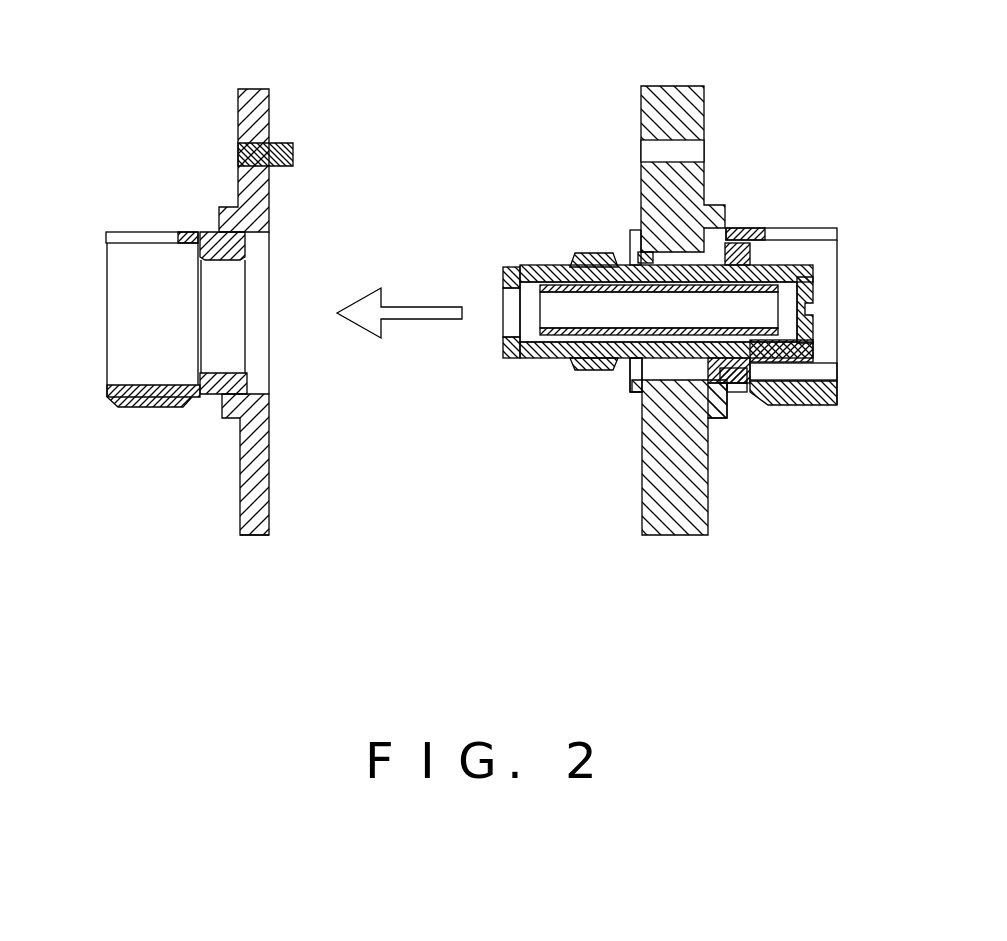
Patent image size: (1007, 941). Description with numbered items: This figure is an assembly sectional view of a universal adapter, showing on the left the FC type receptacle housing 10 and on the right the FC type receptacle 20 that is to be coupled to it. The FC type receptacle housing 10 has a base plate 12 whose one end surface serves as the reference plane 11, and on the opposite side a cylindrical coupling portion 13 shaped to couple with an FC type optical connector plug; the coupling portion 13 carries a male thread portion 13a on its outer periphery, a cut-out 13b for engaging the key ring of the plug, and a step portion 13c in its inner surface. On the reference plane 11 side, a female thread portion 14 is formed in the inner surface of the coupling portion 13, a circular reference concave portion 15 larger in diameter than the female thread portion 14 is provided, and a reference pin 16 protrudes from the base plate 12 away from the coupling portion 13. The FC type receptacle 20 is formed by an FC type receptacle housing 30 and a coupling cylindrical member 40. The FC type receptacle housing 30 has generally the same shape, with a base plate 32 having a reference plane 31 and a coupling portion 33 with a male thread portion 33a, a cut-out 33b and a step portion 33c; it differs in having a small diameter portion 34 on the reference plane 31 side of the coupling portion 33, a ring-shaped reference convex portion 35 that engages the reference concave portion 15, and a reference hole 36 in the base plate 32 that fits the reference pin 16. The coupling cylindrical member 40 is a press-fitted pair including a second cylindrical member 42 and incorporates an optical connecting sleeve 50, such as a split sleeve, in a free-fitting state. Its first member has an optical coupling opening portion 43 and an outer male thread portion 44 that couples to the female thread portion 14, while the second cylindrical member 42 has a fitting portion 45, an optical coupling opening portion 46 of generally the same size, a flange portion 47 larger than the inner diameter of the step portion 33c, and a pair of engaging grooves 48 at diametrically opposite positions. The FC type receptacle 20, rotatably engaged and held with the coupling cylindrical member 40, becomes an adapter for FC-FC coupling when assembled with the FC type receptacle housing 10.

The FC type receptacle housing 10 is at (170, 150).
The reference plane 11 is at (271, 493).
The base plate 12 is at (247, 538).
The coupling portion 13 is at (129, 330).
The male thread portion 13a is at (160, 407).
The cut-out 13b is at (133, 232).
The step portion 13c is at (200, 373).
The female thread portion 14 is at (232, 378).
The reference concave portion 15 is at (268, 247).
The reference pin 16 is at (282, 143).
The FC type receptacle 20 is at (770, 86).
The FC type receptacle housing 30 is at (726, 192).
The reference plane 31 is at (640, 100).
The base plate 32 is at (663, 93).
The coupling portion 33 is at (808, 325).
The male thread portion 33a is at (825, 405).
The cut-out 33b is at (815, 234).
The step portion 33c is at (740, 383).
The small diameter portion 34 is at (645, 253).
The reference convex portion 35 is at (633, 230).
The reference hole 36 is at (650, 155).
The coupling cylindrical member 40 is at (527, 379).
The second cylindrical member 42 is at (815, 358).
The optical coupling opening portion 43 is at (503, 330).
The male thread portion 44 is at (585, 375).
The fitting portion 45 is at (714, 412).
The optical coupling opening portion 46 is at (812, 332).
The flange portion 47 is at (757, 392).
The engaging groove 48 is at (812, 310).
The optical connecting sleeve 50 is at (633, 372).